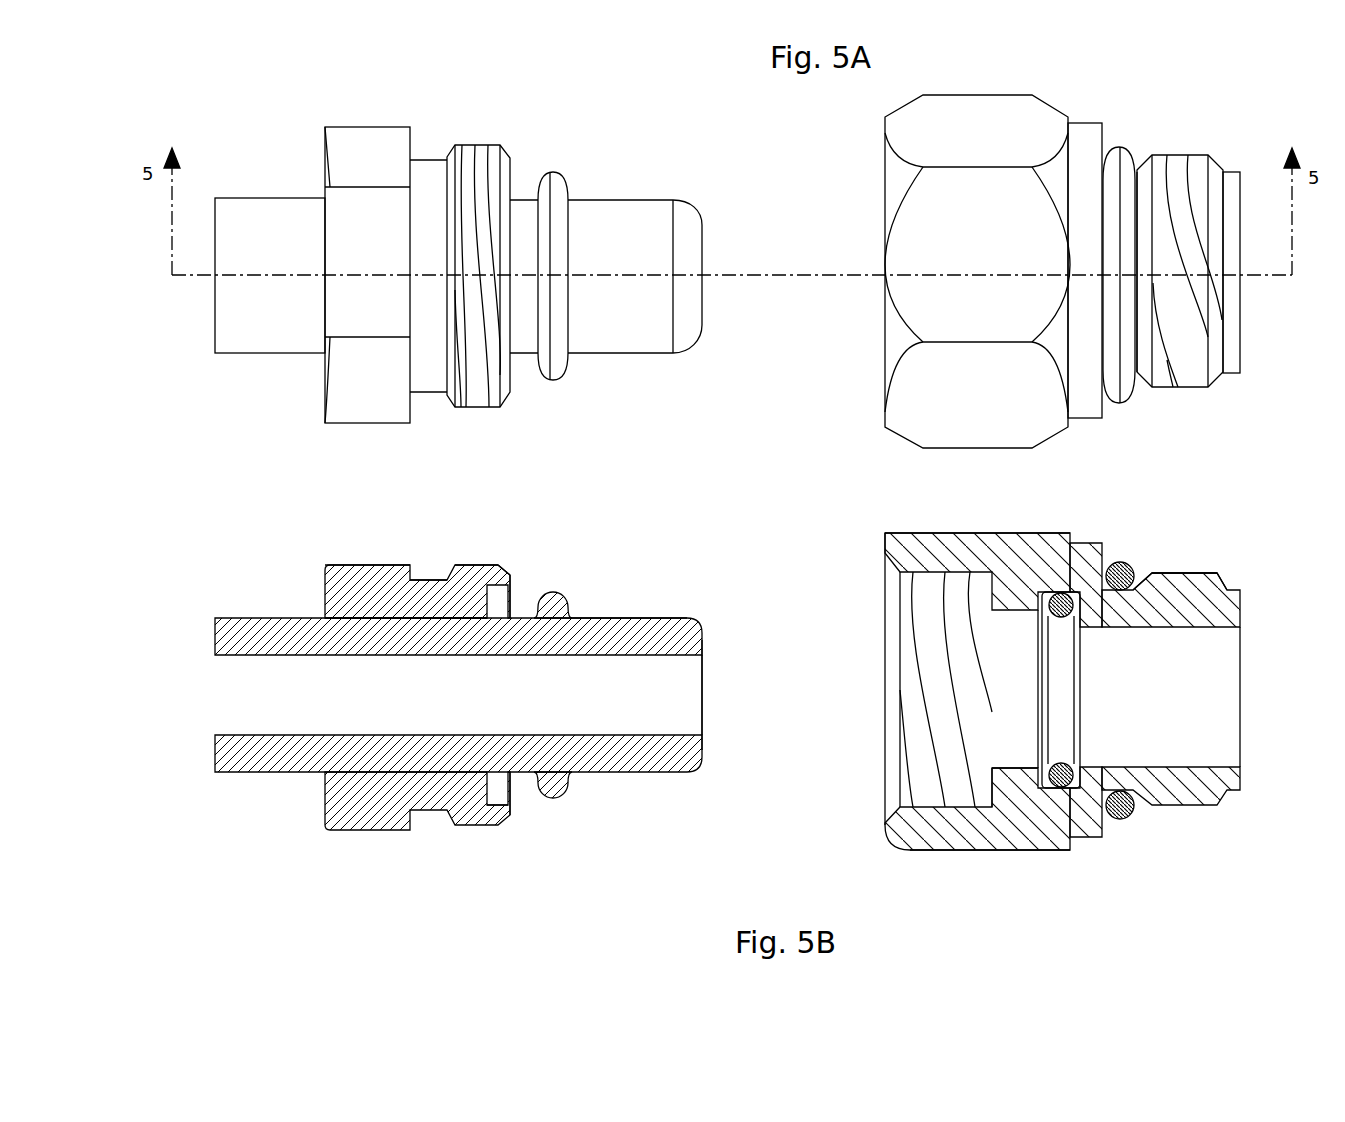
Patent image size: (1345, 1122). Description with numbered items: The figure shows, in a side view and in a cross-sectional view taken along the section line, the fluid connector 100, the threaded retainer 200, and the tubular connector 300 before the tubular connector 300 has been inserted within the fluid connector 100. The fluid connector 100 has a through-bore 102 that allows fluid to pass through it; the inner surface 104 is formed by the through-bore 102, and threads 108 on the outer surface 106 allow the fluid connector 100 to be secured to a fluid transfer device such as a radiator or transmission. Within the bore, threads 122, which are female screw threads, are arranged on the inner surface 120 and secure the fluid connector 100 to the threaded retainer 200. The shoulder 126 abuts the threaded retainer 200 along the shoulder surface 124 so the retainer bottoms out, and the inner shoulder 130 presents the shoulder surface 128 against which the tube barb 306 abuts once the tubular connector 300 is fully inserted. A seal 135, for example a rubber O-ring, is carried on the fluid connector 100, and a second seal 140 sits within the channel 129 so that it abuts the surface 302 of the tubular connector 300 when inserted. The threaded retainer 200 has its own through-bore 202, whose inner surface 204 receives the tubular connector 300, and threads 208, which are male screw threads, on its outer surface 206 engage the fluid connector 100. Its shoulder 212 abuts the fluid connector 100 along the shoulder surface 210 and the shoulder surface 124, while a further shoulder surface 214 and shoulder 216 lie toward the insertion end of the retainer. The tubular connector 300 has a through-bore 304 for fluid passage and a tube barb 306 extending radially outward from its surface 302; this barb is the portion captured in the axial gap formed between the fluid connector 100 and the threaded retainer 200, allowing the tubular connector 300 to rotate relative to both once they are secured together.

In FIG. 5A, the fluid connector 100 is at (902, 437).
In FIG. 5B, the fluid connector 100 is at (952, 683).
In FIG. 5A, the through-bore 102 is at (1154, 270).
In FIG. 5B, the through-bore 102 is at (1181, 650).
In FIG. 5B, the inner surface 104 is at (1205, 764).
In FIG. 5A, the outer surface 106 is at (1163, 378).
In FIG. 5B, the outer surface 106 is at (1172, 576).
In FIG. 5A, the threads 108 is at (1187, 363).
In FIG. 5B, the threads 108 is at (1200, 569).
In FIG. 5B, the inner surface 120 is at (910, 716).
In FIG. 5B, the threads 122 is at (904, 645).
In FIG. 5B, the shoulder surface 124 is at (884, 548).
In FIG. 5B, the shoulder 126 is at (884, 832).
In FIG. 5B, the shoulder surface 128 is at (995, 796).
In FIG. 5B, the channel 129 is at (1033, 636).
In FIG. 5B, the inner shoulder 130 is at (1003, 800).
In FIG. 5A, the seal 135 is at (1125, 404).
In FIG. 5B, the seal 135 is at (1134, 564).
In FIG. 5B, the seal 140 is at (1058, 591).
In FIG. 5A, the threaded retainer 200 is at (410, 329).
In FIG. 5B, the threaded retainer 200 is at (320, 601).
In FIG. 5B, the through-bore 202 is at (514, 794).
In FIG. 5B, the inner surface 204 is at (360, 612).
In FIG. 5A, the outer surface 206 is at (466, 396).
In FIG. 5B, the outer surface 206 is at (470, 565).
In FIG. 5A, the threads 208 is at (483, 367).
In FIG. 5B, the threads 208 is at (492, 562).
In FIG. 5A, the shoulder surface 210 is at (407, 363).
In FIG. 5B, the shoulder surface 210 is at (400, 568).
In FIG. 5A, the shoulder 212 is at (424, 377).
In FIG. 5B, the shoulder 212 is at (418, 572).
In FIG. 5B, the shoulder surface 214 is at (500, 803).
In FIG. 5B, the shoulder 216 is at (510, 563).
In FIG. 5A, the tubular connector 300 is at (257, 357).
In FIG. 5B, the tubular connector 300 is at (253, 615).
In FIG. 5A, the surface 302 is at (598, 340).
In FIG. 5B, the surface 302 is at (622, 616).
In FIG. 5B, the through-bore 304 is at (707, 682).
In FIG. 5A, the tube barb 306 is at (540, 385).
In FIG. 5B, the tube barb 306 is at (556, 587).